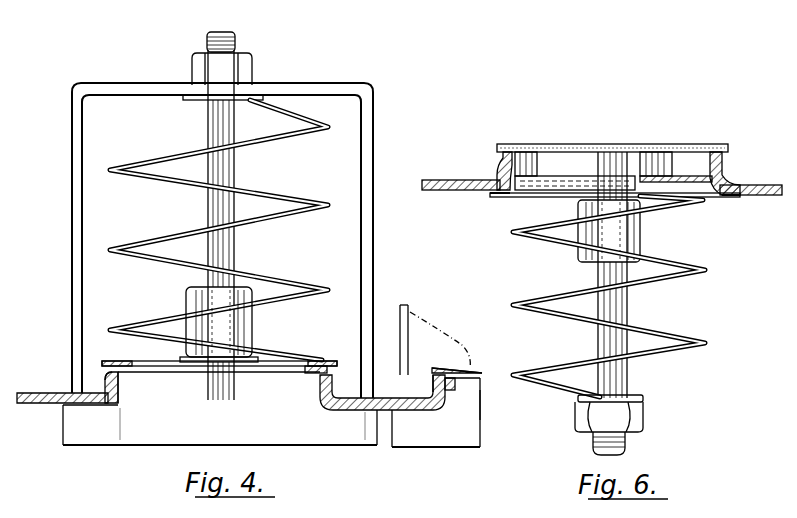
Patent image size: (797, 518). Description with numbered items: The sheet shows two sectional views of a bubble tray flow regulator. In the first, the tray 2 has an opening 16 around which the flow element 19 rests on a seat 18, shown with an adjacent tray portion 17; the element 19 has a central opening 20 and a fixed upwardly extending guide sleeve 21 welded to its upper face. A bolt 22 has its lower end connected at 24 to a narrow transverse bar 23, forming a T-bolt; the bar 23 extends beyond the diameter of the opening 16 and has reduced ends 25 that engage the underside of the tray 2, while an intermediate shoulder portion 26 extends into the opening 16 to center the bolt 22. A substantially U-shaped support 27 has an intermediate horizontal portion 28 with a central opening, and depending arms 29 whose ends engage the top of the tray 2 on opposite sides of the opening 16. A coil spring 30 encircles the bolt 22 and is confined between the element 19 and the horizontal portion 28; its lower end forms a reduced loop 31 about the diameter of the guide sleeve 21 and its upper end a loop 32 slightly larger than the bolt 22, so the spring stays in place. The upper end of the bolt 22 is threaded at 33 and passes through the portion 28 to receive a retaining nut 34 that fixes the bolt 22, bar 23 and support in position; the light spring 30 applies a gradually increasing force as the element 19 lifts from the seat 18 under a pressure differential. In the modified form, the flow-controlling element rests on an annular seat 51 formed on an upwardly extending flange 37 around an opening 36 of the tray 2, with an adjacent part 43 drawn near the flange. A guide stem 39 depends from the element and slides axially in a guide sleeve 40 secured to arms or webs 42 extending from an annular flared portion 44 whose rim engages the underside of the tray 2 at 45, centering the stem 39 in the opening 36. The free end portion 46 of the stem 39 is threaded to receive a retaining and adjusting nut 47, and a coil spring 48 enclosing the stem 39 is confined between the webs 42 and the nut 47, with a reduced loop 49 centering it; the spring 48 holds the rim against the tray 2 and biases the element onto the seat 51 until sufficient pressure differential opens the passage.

In FIG. 4, the tray 2 is at (40, 400).
In FIG. 6, the tray 2 is at (465, 180).
In FIG. 4, the opening 16 is at (352, 360).
In FIG. 4, the flange 17 is at (100, 386).
In FIG. 4, the seat 18 is at (362, 386).
In FIG. 4, the flow element 19 is at (318, 361).
In FIG. 4, the central opening 20 is at (252, 358).
In FIG. 4, the guide sleeve 21 is at (188, 300).
In FIG. 4, the bolt 22 is at (215, 212).
In FIG. 4, the transverse bar 23 is at (165, 435).
In FIG. 4, the connection 24 is at (212, 382).
In FIG. 4, the reduced ends 25 is at (118, 428).
In FIG. 4, the intermediate shoulder portion 26 is at (66, 442).
In FIG. 4, the U-shaped support 27 is at (374, 135).
In FIG. 4, the horizontal portion 28 is at (345, 72).
In FIG. 4, the depending arms 29 is at (70, 168).
In FIG. 4, the spring 30 is at (326, 203).
In FIG. 6, the spring 30 is at (592, 124).
In FIG. 4, the reduced loop 31 is at (304, 363).
In FIG. 4, the loop 32 is at (255, 96).
In FIG. 4, the threaded upper end 33 is at (206, 44).
In FIG. 4, the retaining nut 34 is at (245, 62).
In FIG. 6, the opening 36 is at (672, 162).
In FIG. 6, the annular upwardly extending flange 37 is at (725, 165).
In FIG. 6, the guide stem 39 is at (598, 280).
In FIG. 6, the guide sleeve 40 is at (580, 250).
In FIG. 6, the arms or webs 42 is at (718, 178).
In FIG. 6, the lower plate 43 is at (505, 178).
In FIG. 6, the annular flared portion 44 is at (498, 196).
In FIG. 6, the engagement point 45 is at (500, 196).
In FIG. 6, the free end portion 46 is at (625, 450).
In FIG. 6, the retaining and adjusting nut 47 is at (640, 424).
In FIG. 6, the coil spring 48 is at (722, 272).
In FIG. 6, the reduced loop 49 is at (635, 396).
In FIG. 6, the seat 51 is at (503, 160).